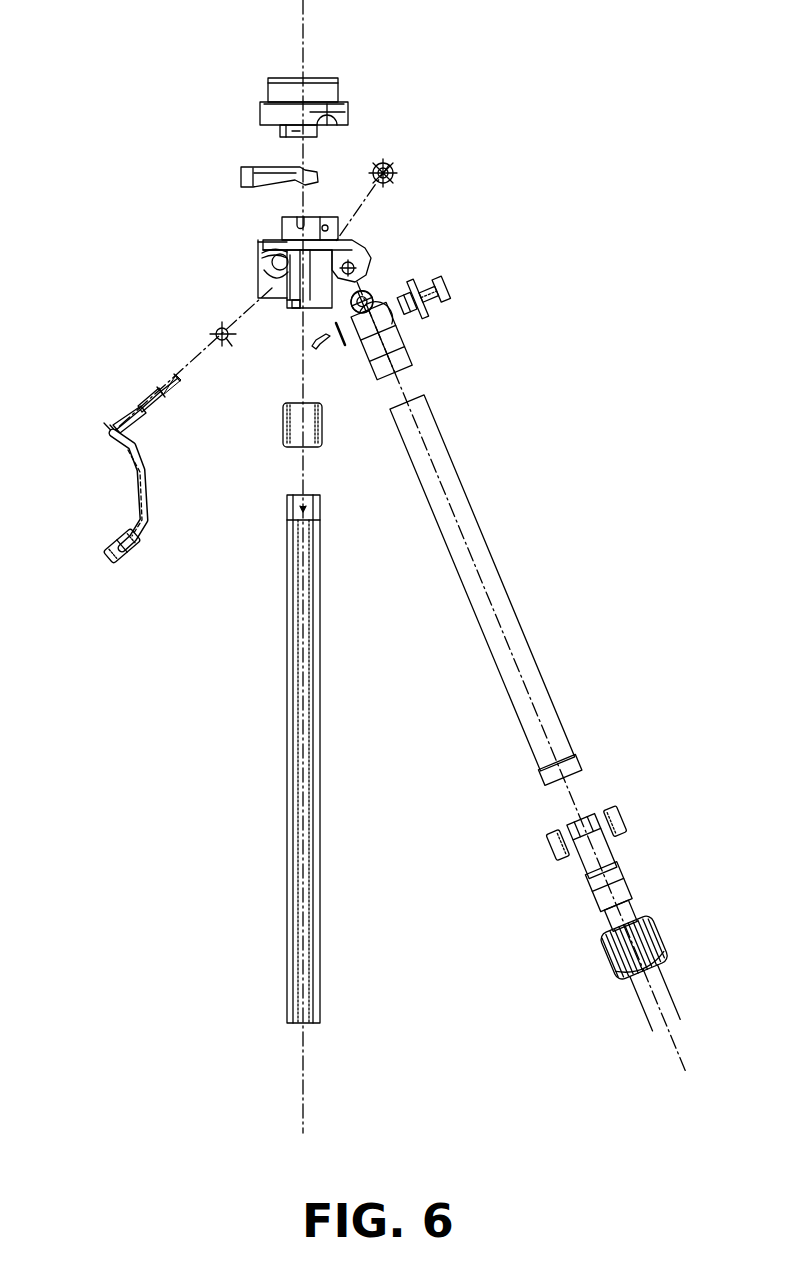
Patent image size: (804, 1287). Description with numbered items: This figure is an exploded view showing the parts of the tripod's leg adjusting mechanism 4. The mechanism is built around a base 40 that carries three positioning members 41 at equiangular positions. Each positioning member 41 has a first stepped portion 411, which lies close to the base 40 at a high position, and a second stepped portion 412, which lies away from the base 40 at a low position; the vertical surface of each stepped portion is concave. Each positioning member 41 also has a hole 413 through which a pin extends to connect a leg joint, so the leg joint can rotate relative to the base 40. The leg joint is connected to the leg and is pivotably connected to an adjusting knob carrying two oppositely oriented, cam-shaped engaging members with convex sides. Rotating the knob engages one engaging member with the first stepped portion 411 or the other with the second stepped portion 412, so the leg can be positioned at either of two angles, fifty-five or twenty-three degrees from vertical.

The leg adjusting mechanism 4 is at (380, 231).
The base 40 is at (357, 244).
The positioning member 41 is at (262, 260).
The first stepped portion 411 is at (262, 243).
The second stepped portion 412 is at (268, 268).
The hole 413 is at (291, 310).